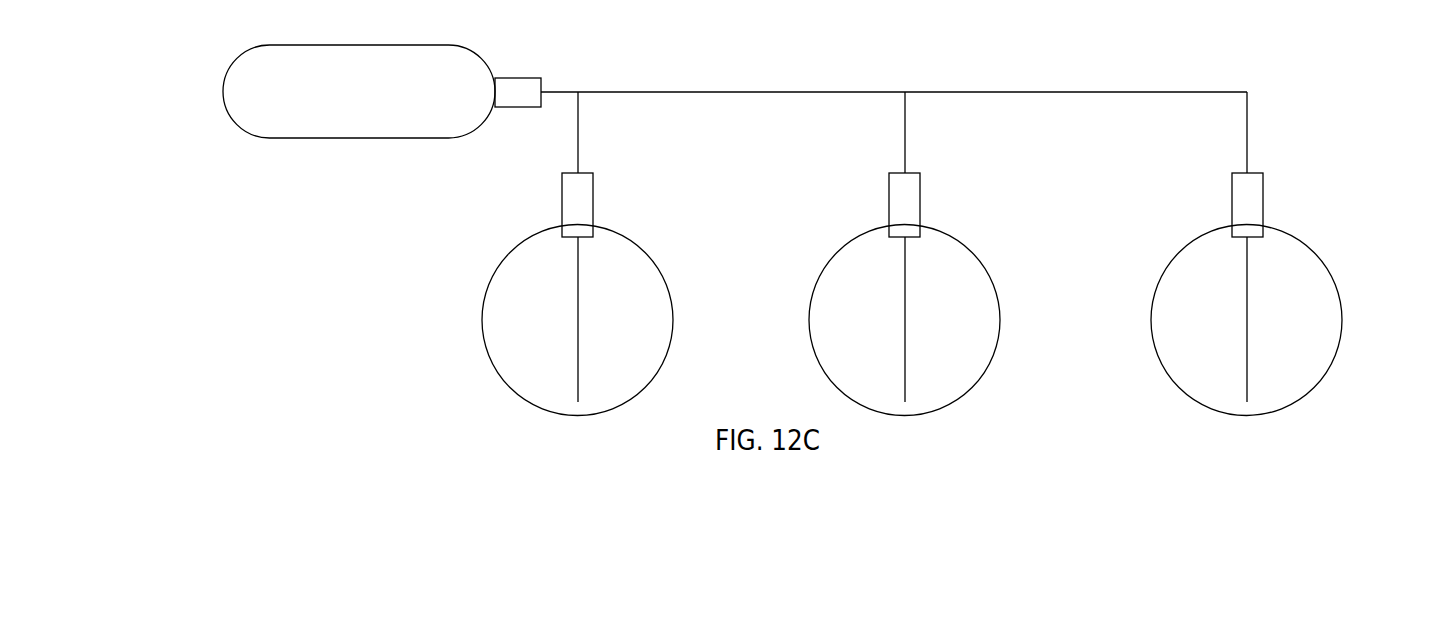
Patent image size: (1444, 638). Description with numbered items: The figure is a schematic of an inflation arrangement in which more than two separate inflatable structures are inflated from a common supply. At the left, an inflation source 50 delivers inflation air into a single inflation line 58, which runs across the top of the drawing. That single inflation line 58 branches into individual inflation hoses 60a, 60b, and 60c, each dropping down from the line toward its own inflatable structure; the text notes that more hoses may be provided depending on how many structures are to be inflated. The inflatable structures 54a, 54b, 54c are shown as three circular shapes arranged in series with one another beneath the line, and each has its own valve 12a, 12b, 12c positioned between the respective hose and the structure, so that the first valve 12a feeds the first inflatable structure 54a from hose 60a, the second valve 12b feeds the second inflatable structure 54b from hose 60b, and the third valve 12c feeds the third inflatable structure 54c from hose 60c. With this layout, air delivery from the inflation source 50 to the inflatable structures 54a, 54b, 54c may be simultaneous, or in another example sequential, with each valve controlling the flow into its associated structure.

The inflation source 50 is at (335, 111).
The inflation line 58 is at (718, 95).
The inflation hose 60a is at (578, 138).
The inflation hose 60b is at (905, 135).
The inflation hose 60c is at (1247, 137).
The valve 12a is at (580, 195).
The valve 12b is at (905, 205).
The valve 12c is at (1250, 202).
The inflatable structure 54a is at (538, 330).
The inflatable structure 54b is at (987, 365).
The inflatable structure 54c is at (1293, 368).